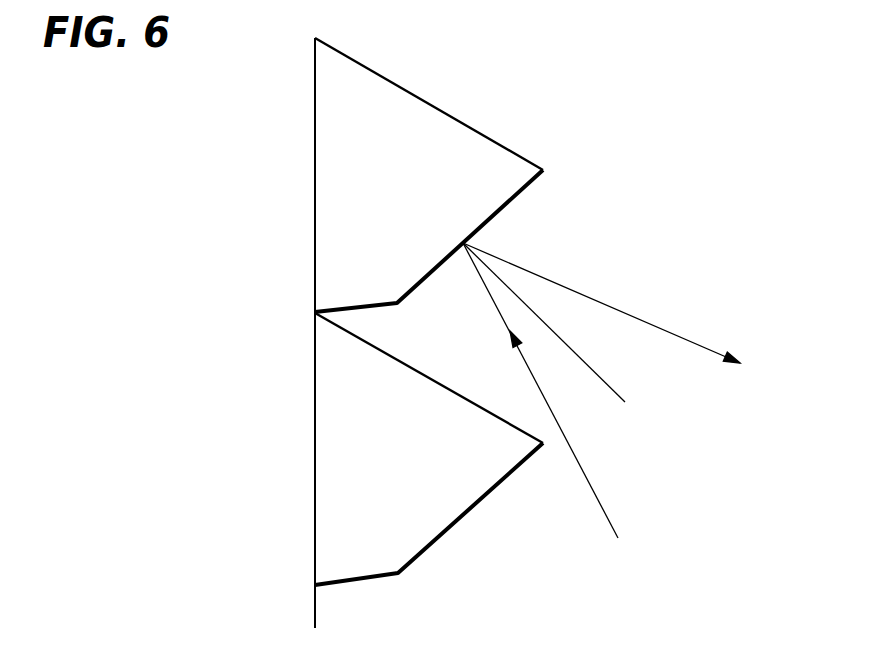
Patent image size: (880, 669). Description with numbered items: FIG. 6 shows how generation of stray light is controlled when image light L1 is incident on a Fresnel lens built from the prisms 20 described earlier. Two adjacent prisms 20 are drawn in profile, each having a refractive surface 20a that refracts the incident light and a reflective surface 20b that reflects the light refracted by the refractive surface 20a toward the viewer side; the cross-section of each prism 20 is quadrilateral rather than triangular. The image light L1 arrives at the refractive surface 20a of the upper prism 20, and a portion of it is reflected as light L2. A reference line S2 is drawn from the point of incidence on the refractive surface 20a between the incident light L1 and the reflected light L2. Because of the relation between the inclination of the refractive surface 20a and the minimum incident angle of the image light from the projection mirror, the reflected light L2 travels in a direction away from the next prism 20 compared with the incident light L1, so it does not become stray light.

The prism 20 is at (452, 323).
The refractive surface 20a is at (500, 211).
The reflective surface 20b is at (470, 127).
The image light L1 is at (607, 516).
The reflected light L2 is at (703, 345).
The surface normal S2 is at (602, 380).